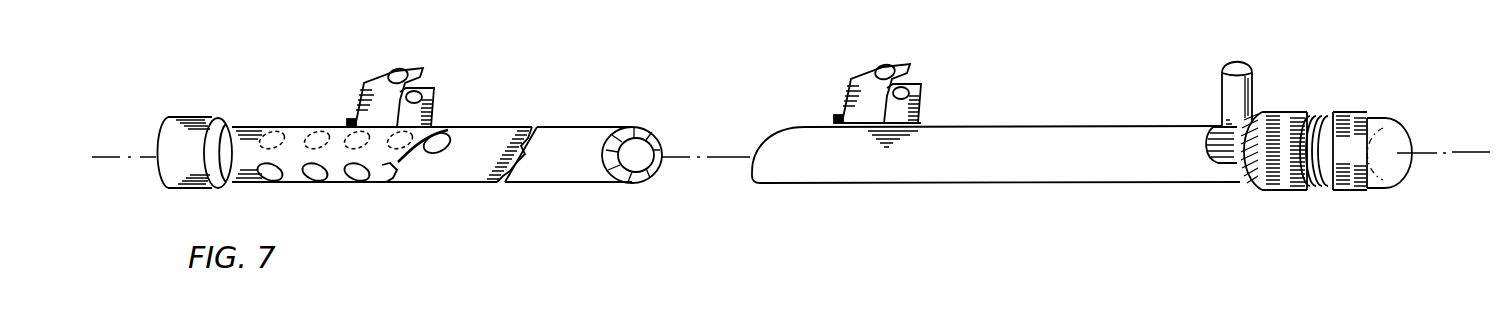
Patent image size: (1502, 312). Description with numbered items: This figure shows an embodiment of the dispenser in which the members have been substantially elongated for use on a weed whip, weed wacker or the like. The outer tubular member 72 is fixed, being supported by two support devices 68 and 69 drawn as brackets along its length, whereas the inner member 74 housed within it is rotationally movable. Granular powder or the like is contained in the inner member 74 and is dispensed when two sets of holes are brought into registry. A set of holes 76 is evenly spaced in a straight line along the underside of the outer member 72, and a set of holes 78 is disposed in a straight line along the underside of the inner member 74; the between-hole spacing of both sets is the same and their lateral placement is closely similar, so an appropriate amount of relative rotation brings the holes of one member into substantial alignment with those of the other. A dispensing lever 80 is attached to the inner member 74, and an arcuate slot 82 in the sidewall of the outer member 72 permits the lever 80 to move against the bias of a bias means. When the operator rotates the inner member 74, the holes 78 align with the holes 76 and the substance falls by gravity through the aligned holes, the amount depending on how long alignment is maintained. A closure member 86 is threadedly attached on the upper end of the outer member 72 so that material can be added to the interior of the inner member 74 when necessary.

The support device 68 is at (362, 94).
The support device 69 is at (868, 97).
The outer tubular member 72 is at (598, 138).
The inner member 74 is at (488, 150).
The set of holes 76 is at (314, 174).
The set of holes 78 is at (440, 152).
The dispensing lever 80 is at (1242, 93).
The arcuate slot 82 is at (1230, 164).
The closure member 86 is at (1398, 157).